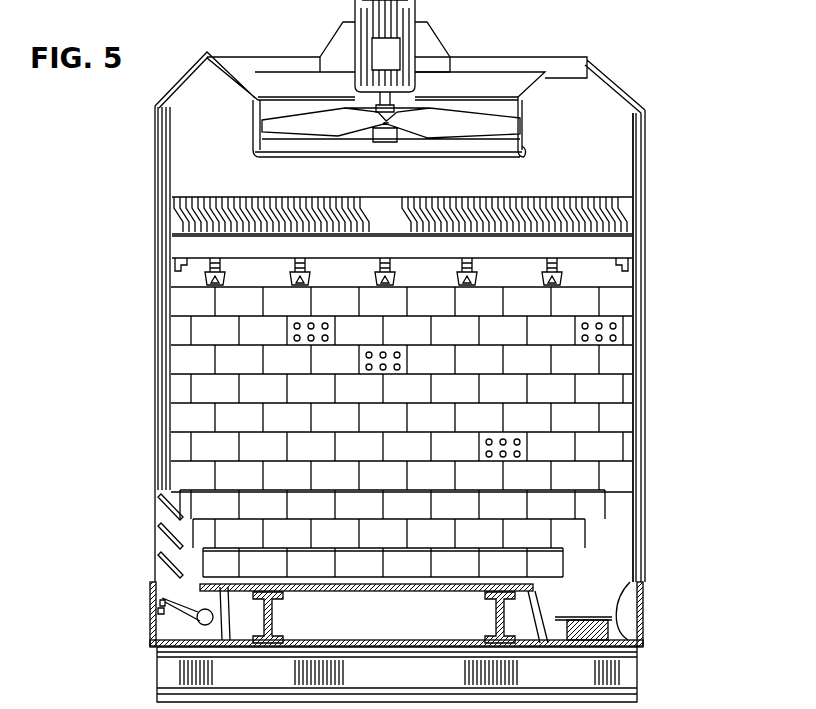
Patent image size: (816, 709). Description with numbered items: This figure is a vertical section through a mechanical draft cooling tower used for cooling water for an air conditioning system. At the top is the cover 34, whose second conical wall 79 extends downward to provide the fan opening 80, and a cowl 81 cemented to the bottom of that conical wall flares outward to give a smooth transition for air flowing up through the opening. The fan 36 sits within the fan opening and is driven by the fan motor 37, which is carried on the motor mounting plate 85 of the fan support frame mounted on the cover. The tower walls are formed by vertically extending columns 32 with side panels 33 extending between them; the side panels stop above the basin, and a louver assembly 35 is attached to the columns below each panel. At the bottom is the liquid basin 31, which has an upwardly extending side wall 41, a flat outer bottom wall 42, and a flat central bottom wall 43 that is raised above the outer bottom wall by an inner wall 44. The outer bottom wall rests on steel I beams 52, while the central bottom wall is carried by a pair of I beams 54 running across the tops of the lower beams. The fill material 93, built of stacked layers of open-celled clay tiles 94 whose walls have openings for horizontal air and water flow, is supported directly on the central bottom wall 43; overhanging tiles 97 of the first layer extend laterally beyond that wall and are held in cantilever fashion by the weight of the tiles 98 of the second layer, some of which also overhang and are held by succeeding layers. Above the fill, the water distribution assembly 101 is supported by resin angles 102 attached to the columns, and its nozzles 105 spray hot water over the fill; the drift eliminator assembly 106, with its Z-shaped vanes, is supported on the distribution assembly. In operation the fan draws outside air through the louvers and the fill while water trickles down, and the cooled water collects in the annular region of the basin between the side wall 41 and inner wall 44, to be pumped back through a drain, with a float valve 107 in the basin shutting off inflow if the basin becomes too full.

The liquid basin 31 is at (152, 624).
The column 32 is at (636, 397).
The side panel 33 is at (158, 333).
The cover 34 is at (612, 82).
The louver assembly 35 is at (165, 540).
The fan 36 is at (468, 128).
The fan motor 37 is at (413, 30).
The side wall 41 is at (642, 622).
The outer bottom wall 42 is at (625, 611).
The central bottom wall 43 is at (400, 592).
The inner wall 44 is at (540, 612).
The I beam 52 is at (162, 672).
The I beam 54 is at (276, 620).
The second conical wall 79 is at (250, 120).
The fan opening 80 is at (235, 84).
The cowl 81 is at (524, 150).
The motor mounting plate 85 is at (343, 47).
The fill material 93 is at (612, 456).
The clay tile 94 is at (616, 333).
The overhanging tile 97 is at (600, 566).
The second-layer tile 98 is at (600, 543).
The water distribution assembly 101 is at (620, 252).
The angle 102 is at (175, 265).
The nozzle 105 is at (562, 282).
The drift eliminator assembly 106 is at (620, 214).
The float valve 107 is at (190, 592).